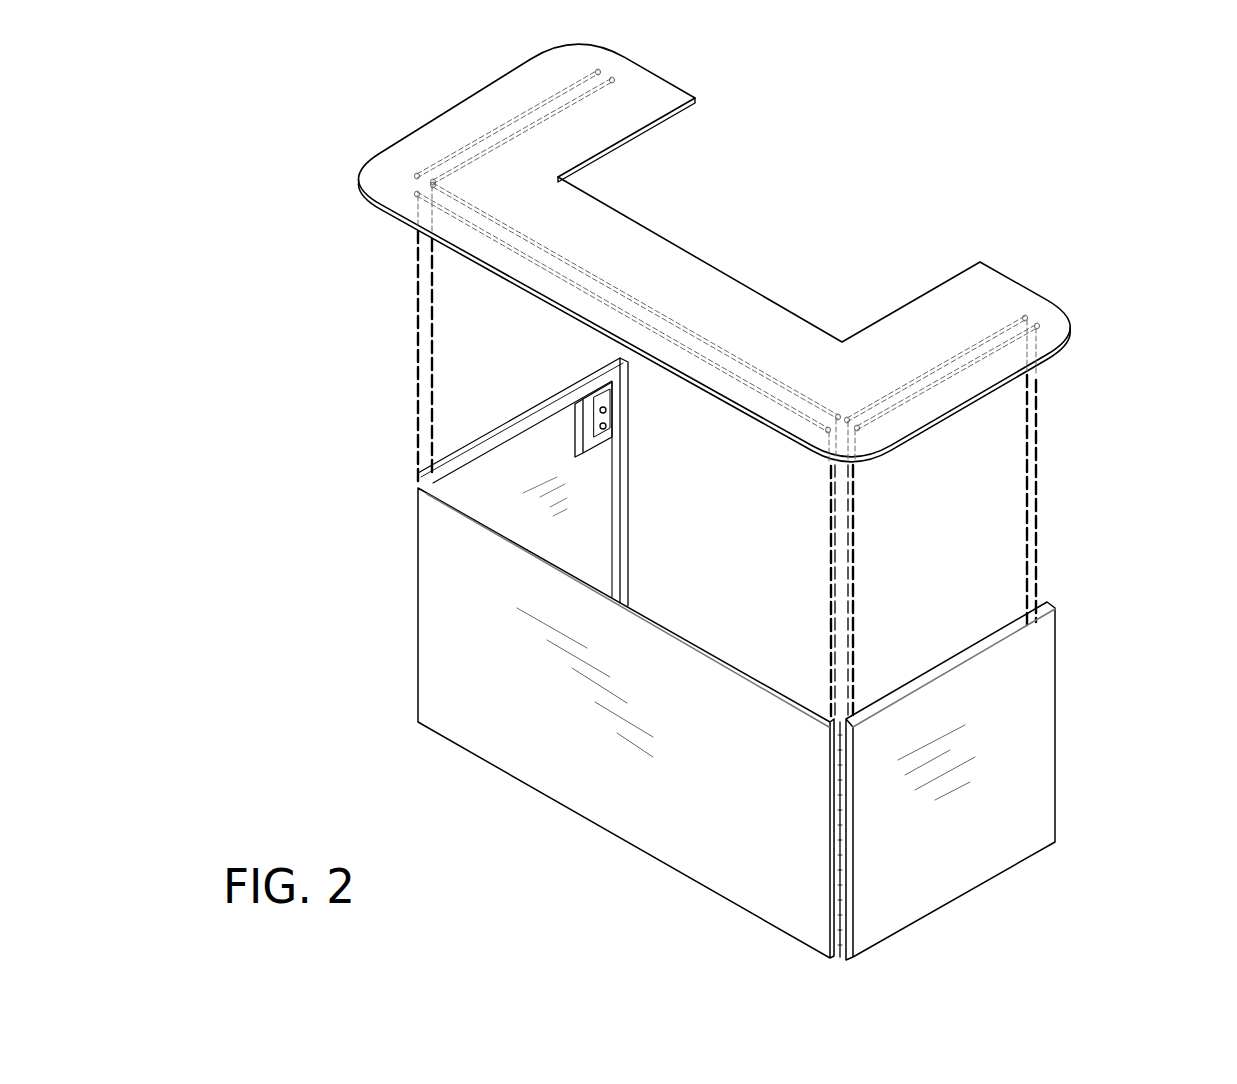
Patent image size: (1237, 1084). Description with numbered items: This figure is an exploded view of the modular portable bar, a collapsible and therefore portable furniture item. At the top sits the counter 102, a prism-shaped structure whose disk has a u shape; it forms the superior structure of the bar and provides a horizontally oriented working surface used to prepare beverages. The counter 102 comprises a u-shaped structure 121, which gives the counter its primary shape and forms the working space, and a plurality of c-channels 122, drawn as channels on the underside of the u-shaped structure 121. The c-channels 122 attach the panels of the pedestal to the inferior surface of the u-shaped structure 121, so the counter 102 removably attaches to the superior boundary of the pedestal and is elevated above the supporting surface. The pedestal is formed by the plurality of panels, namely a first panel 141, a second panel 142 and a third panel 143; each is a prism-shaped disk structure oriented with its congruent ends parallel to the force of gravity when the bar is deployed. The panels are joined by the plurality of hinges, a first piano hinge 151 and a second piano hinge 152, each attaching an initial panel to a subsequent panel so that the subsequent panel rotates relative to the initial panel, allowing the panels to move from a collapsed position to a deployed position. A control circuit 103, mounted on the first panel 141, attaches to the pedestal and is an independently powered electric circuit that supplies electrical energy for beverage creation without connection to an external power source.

The counter 102 is at (430, 118).
The u-shaped structure 121 is at (950, 290).
The plurality of c-channels 122 is at (913, 382).
The control circuit 103 is at (610, 428).
The first panel 141 is at (522, 487).
The second panel 142 is at (473, 710).
The third panel 143 is at (1027, 733).
The first piano hinge 151 is at (418, 485).
The second piano hinge 152 is at (838, 898).